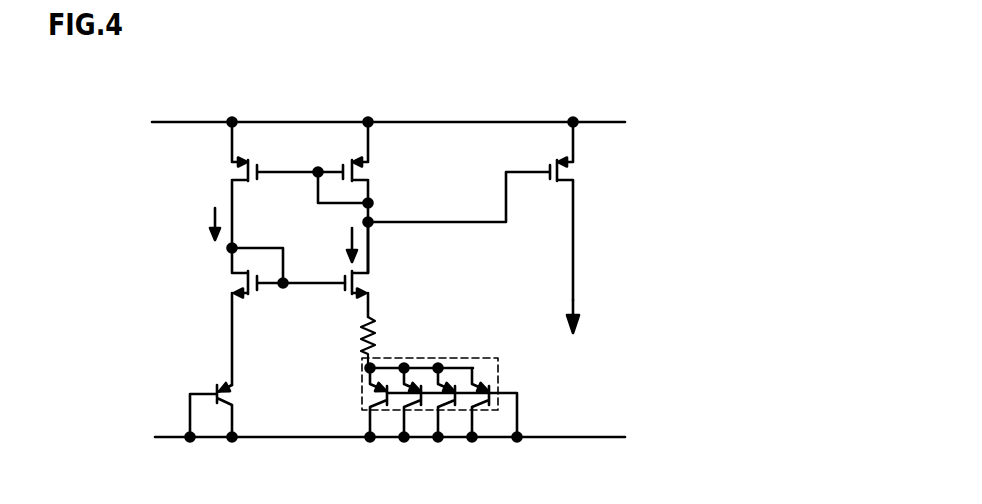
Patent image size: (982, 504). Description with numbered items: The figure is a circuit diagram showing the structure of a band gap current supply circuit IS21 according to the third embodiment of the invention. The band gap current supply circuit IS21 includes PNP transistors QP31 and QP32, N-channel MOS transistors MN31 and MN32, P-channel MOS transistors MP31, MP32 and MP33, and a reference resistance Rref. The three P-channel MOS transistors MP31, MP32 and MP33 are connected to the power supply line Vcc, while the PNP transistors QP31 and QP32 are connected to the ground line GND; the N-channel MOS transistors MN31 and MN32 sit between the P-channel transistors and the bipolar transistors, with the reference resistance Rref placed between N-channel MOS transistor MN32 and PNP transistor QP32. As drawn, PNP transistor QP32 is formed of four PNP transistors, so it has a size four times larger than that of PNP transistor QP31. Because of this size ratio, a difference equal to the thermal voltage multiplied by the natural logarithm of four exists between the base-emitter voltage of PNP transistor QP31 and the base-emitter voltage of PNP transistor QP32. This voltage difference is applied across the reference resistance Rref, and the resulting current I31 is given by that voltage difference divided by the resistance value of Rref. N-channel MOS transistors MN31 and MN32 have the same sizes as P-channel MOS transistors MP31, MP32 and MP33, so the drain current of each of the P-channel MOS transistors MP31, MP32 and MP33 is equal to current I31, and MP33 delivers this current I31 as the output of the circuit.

The band gap current supply circuit IS21 is at (637, 84).
The power supply line Vcc is at (165, 121).
The ground line GND is at (170, 437).
The P-channel MOS transistor MP31 is at (230, 172).
The P-channel MOS transistor MP32 is at (368, 172).
The P-channel MOS transistor MP33 is at (575, 172).
The N-channel MOS transistor MN31 is at (232, 283).
The N-channel MOS transistor MN32 is at (370, 283).
The reference resistance Rref is at (377, 336).
The PNP transistor QP31 is at (235, 394).
The PNP transistor QP32 is at (500, 361).
The current I31 is at (207, 215).